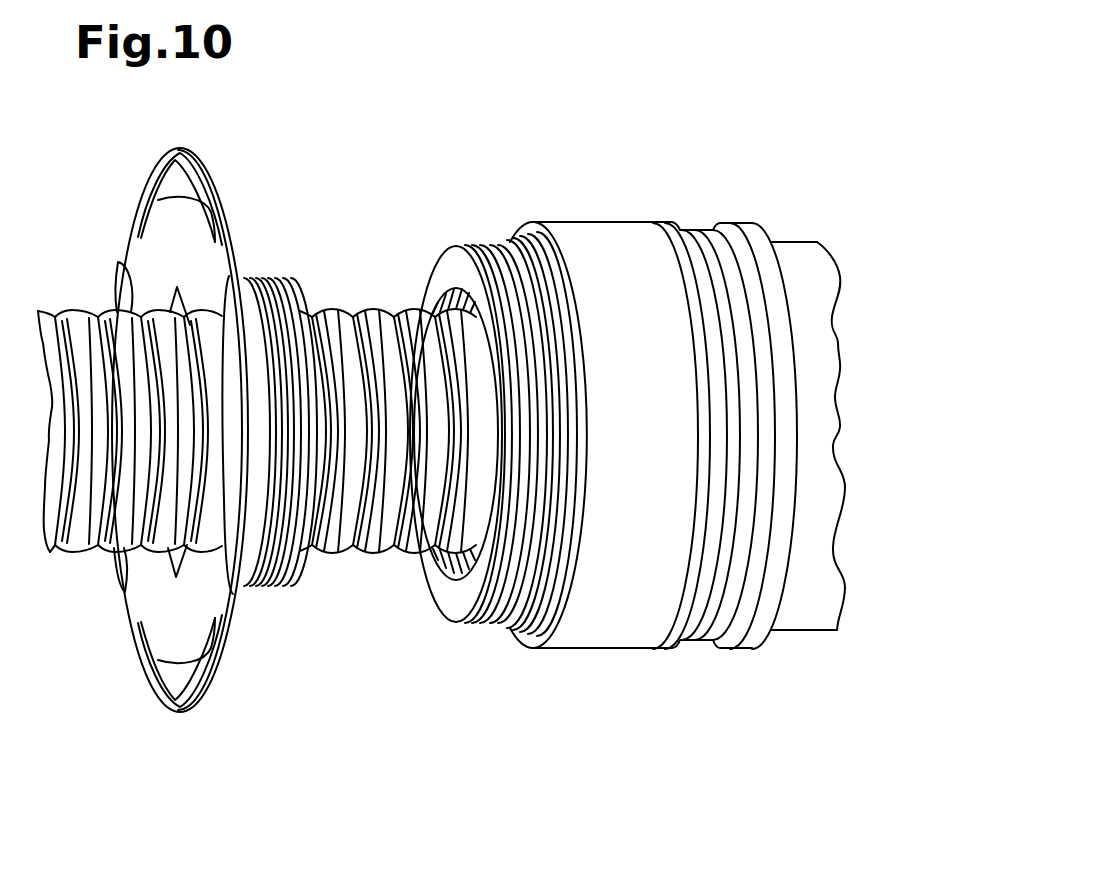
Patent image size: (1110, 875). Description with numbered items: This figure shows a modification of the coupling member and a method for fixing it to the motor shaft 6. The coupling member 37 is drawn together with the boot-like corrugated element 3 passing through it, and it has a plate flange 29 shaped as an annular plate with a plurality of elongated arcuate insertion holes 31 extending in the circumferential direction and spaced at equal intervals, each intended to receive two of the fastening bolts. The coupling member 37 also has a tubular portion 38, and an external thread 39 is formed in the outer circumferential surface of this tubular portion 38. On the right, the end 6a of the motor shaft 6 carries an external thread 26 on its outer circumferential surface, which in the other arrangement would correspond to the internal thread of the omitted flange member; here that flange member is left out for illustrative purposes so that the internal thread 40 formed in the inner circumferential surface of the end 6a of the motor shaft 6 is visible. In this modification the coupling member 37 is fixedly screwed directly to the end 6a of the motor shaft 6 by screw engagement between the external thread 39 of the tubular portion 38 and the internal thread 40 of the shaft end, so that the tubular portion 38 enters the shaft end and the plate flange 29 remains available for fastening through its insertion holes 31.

The boot (bellows) 3 is at (70, 309).
The motor shaft 6 is at (618, 222).
The end of the motor shaft 6a is at (450, 267).
The external thread 26 is at (480, 246).
The plate flange 29 is at (232, 183).
The insertion holes 31 is at (160, 178).
The coupling member 37 is at (286, 168).
The tubular portion 38 is at (268, 282).
The external thread 39 is at (278, 560).
The internal thread 40 is at (444, 562).